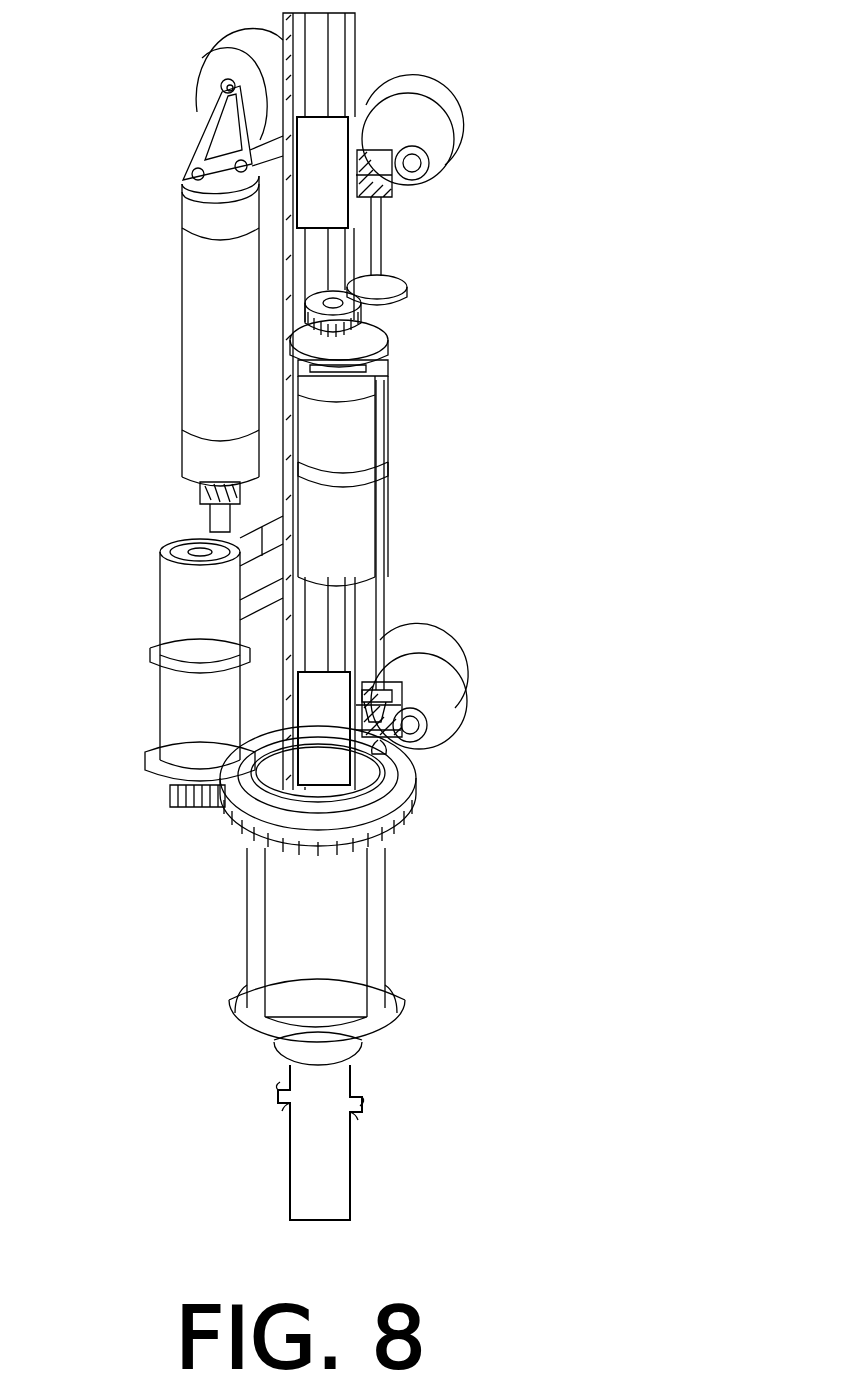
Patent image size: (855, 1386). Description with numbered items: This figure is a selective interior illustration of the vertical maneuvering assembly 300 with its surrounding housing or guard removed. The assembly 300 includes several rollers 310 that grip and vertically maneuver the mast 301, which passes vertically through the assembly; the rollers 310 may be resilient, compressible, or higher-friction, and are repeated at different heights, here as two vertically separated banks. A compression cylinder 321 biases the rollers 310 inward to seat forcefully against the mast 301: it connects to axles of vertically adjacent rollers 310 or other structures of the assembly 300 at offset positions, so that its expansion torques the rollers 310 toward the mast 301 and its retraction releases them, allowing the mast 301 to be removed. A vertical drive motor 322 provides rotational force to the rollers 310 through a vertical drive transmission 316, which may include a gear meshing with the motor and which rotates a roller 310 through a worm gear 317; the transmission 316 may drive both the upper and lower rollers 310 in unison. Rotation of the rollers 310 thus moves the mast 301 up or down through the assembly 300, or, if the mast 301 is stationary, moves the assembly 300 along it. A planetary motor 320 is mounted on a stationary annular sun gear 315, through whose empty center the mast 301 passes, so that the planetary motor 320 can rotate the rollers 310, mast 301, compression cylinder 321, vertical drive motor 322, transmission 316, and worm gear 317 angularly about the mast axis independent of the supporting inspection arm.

The vertical maneuvering assembly 300 is at (135, 963).
The mast 301 is at (330, 60).
The rollers 310 is at (445, 150).
The sun gear 315 is at (400, 800).
The vertical drive transmission 316 is at (400, 305).
The worm gear 317 is at (405, 690).
The planetary motor 320 is at (205, 610).
The compression cylinder 321 is at (210, 312).
The vertical drive motor 322 is at (345, 437).